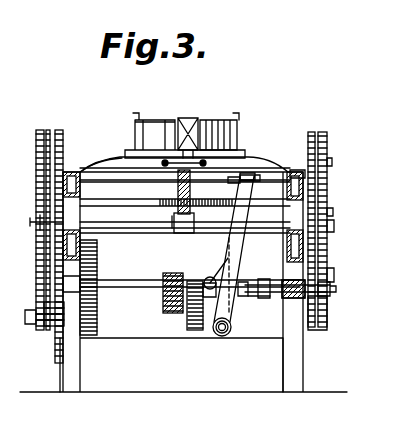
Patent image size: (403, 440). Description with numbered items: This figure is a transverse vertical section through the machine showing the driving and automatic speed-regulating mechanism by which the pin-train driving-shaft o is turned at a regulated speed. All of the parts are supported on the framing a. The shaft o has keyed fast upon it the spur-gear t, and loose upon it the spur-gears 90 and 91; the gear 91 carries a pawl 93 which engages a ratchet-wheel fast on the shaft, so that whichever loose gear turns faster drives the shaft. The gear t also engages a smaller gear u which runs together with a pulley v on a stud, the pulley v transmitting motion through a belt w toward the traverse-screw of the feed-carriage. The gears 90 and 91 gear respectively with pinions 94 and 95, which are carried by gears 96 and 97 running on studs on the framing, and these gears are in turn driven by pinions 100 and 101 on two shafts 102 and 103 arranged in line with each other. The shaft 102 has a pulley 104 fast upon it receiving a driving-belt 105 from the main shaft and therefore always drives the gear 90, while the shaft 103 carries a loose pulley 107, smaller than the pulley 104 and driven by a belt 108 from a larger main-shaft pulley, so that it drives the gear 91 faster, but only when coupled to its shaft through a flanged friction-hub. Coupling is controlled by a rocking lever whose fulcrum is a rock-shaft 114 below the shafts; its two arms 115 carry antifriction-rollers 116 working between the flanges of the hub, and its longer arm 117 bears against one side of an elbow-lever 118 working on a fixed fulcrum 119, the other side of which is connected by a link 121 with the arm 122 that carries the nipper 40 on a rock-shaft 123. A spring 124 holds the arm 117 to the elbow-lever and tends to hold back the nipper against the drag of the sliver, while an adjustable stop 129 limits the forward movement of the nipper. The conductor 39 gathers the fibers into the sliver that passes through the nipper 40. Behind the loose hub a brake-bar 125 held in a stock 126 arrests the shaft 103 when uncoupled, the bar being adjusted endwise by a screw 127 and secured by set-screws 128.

The conductor 39 is at (151, 133).
The nipper 40 is at (203, 121).
The spur-gear 90 is at (47, 130).
The spur-gear 91 is at (325, 133).
The pawl 93 is at (333, 161).
The pinion 94 is at (38, 221).
The pinion 95 is at (331, 212).
The gear 96 is at (60, 133).
The gear 97 is at (313, 149).
The pinion 100 is at (64, 283).
The pinion 101 is at (322, 300).
The shaft 102 is at (190, 296).
The shaft 103 is at (246, 283).
The pulley 104 is at (100, 259).
The driving-belt 105 is at (90, 334).
The pulley 107 is at (181, 283).
The driving-belt 108 is at (190, 326).
The rock-shaft 114 is at (232, 333).
The arms 115 is at (211, 298).
The antifriction-rollers 116 is at (226, 272).
The arm 117 is at (249, 254).
The elbow-lever 118 is at (229, 177).
The fulcrum 119 is at (242, 181).
The link 121 is at (176, 201).
The arm 122 is at (178, 214).
The rock-shaft 123 is at (185, 224).
The spring 124 is at (185, 213).
The bar 125 is at (268, 306).
The stock 126 is at (287, 286).
The screw 127 is at (334, 288).
The set-screws 128 is at (331, 276).
The stop 129 is at (138, 160).
The gear t is at (16, 163).
The shaft o is at (336, 226).
The gear u is at (30, 326).
The pulley v is at (50, 328).
The belt w is at (43, 386).
The framing a is at (184, 367).